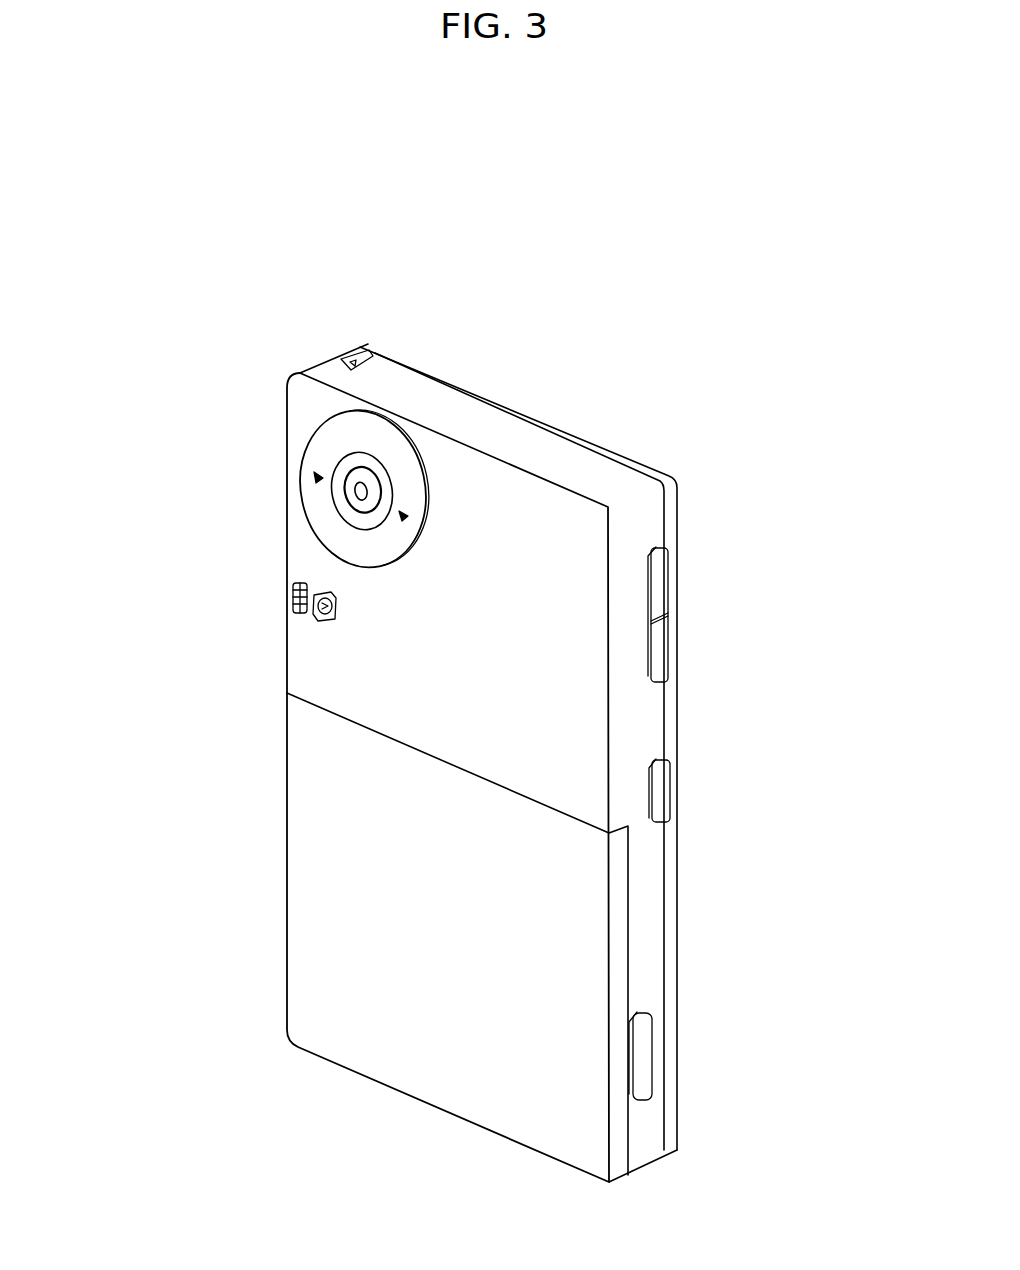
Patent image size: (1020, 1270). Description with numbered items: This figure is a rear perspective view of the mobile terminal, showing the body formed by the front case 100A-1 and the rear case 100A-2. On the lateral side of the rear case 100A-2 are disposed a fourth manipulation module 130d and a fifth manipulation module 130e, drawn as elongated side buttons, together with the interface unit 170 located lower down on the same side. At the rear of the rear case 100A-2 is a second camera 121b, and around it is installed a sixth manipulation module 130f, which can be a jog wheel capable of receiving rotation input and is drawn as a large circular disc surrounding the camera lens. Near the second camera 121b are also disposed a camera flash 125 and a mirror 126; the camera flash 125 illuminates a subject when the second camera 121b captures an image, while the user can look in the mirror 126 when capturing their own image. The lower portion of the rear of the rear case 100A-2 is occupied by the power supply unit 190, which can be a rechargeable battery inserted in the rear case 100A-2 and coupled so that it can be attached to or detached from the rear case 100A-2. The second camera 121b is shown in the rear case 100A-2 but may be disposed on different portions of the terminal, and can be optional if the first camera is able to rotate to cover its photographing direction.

The front case 100A-1 is at (367, 346).
The rear case 100A-2 is at (313, 370).
The sixth manipulation module 130f is at (393, 455).
The second camera 121b is at (357, 503).
The camera flash 125 is at (293, 603).
The mirror 126 is at (320, 612).
The power supply unit 190 is at (318, 869).
The fourth manipulation module 130d is at (660, 580).
The fifth manipulation module 130e is at (658, 784).
The interface unit 170 is at (637, 1068).